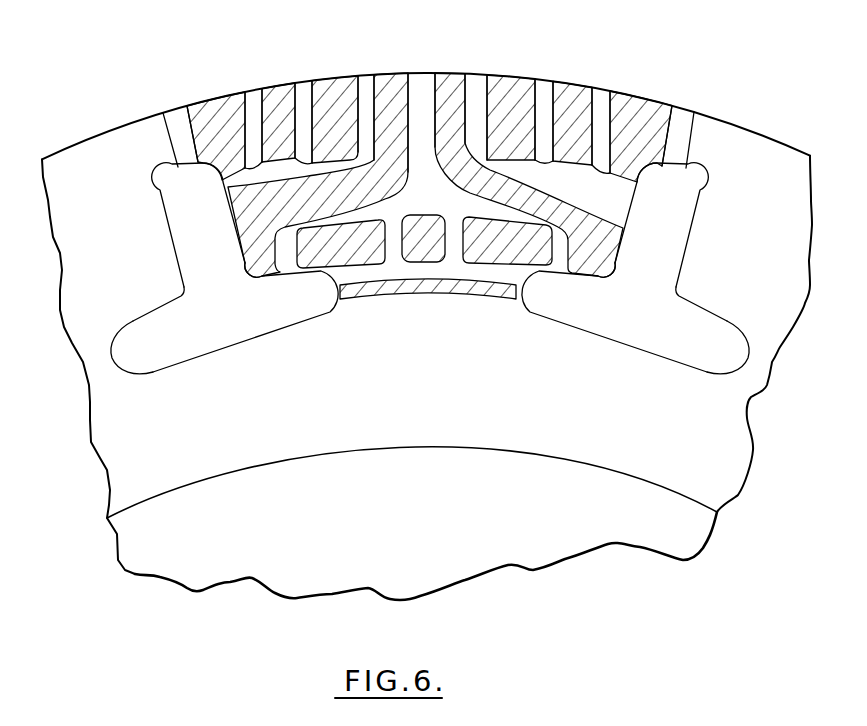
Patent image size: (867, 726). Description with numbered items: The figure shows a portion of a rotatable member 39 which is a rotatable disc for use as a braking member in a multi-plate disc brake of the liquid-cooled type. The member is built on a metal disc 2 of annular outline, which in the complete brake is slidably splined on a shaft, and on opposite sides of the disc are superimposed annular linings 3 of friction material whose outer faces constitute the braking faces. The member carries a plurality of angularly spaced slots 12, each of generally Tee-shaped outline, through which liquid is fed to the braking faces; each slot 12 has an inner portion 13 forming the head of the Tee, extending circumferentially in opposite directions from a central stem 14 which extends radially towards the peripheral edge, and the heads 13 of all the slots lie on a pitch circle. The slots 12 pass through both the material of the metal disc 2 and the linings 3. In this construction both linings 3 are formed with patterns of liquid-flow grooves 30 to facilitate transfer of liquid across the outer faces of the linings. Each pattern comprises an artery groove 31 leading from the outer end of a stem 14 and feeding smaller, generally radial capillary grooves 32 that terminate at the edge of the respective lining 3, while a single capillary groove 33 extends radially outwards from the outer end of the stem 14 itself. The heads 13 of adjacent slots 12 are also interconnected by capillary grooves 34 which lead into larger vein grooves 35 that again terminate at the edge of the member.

The metal disc 2 is at (543, 528).
The annular linings 3 is at (213, 120).
The slots 12 is at (185, 322).
The inner portion 13 is at (138, 352).
The central stem 14 is at (192, 208).
The liquid-flow grooves 30 is at (572, 172).
The artery groove 31 is at (335, 163).
The capillary grooves 32 is at (252, 110).
The capillary groove 33 is at (178, 123).
The capillary grooves 34 is at (453, 242).
The vein grooves 35 is at (423, 113).
The rotatable member 39 is at (160, 470).